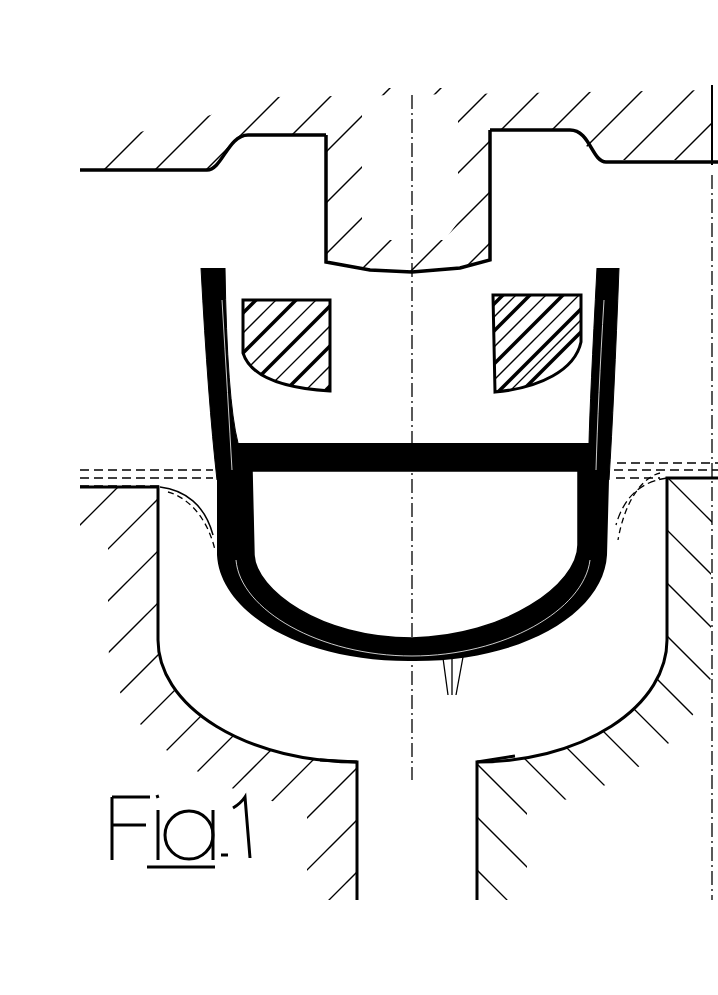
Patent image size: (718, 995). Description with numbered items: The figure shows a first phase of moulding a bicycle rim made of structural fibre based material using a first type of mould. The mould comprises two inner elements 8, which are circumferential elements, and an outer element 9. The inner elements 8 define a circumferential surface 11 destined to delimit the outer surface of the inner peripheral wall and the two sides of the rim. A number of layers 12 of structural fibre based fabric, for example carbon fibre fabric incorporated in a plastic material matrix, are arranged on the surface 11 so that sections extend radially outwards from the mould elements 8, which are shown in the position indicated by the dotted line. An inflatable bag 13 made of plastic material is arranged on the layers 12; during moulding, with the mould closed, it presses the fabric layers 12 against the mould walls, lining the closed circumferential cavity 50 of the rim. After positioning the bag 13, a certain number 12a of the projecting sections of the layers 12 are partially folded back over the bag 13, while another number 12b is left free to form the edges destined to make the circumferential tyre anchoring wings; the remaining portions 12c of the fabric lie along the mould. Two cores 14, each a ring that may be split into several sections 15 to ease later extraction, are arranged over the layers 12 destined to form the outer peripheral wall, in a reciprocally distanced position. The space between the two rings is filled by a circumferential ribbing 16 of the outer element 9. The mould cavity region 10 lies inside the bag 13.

The inner elements 8 is at (185, 745).
The outer element 9 is at (178, 171).
The mold cavity 10 is at (415, 518).
The circumferential surface 11 is at (330, 757).
The layers of structural fibre based fabric 12 is at (113, 478).
The partially folded back projecting sections 12a is at (420, 442).
The free edges 12b is at (212, 322).
The film portion on mold 12c is at (687, 477).
The inflatable bag 13 is at (333, 473).
The cores 14 is at (491, 355).
The ring sections 15 is at (290, 313).
The circumferential ribbing 16 is at (466, 197).
The closed circumferential cavity 50 is at (253, 613).